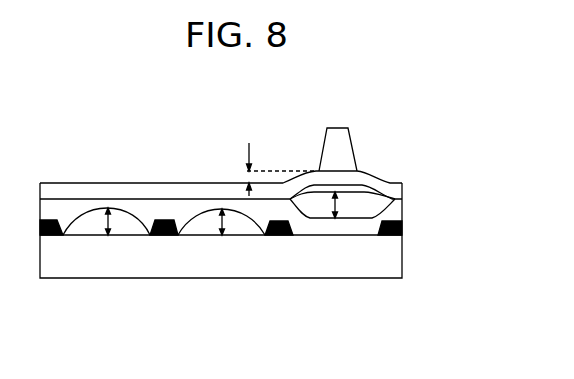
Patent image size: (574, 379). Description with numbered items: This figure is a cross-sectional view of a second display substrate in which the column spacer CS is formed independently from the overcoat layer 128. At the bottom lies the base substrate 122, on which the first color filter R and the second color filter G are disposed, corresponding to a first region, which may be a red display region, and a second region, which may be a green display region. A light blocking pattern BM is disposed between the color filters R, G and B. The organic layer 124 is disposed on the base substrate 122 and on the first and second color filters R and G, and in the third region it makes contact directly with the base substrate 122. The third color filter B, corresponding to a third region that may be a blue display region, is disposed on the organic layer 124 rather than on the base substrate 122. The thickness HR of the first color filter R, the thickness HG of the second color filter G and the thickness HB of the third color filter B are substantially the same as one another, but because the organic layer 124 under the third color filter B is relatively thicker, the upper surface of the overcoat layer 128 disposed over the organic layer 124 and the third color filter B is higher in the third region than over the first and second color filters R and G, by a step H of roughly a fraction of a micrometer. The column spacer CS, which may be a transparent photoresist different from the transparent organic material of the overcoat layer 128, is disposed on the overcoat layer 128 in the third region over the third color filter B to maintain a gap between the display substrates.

The base substrate 122 is at (402, 260).
The light blocking pattern BM is at (402, 230).
The organic layer 124 is at (402, 210).
The overcoat layer 128 is at (402, 190).
The first color filter R is at (106, 221).
The second color filter G is at (221, 222).
The third color filter B is at (342, 205).
The thickness of the first color filter HR is at (110, 223).
The thickness of the second color filter HG is at (224, 223).
The thickness of the third color filter HB is at (340, 205).
The step height H is at (274, 169).
The column spacer CS is at (348, 148).